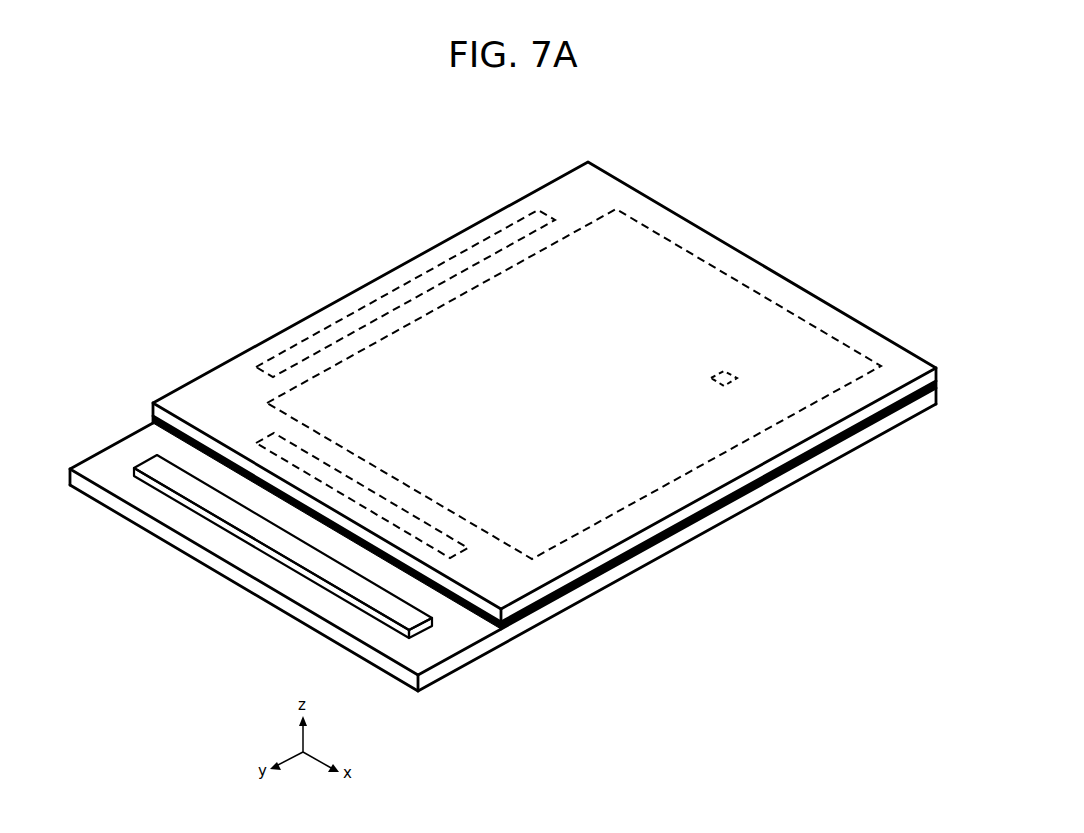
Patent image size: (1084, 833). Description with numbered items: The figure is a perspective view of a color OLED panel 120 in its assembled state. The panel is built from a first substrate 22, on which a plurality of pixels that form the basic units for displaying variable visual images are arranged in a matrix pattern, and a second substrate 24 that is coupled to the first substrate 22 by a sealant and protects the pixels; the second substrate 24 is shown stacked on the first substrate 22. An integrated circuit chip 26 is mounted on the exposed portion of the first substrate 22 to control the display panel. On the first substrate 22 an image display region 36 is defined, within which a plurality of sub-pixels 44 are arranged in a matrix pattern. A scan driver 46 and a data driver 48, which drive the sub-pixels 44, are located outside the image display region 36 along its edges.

The color OLED panel 120 is at (282, 263).
The first substrate 22 is at (452, 642).
The second substrate 24 is at (595, 187).
The integrated circuit chip 26 is at (272, 528).
The image display region 36 is at (772, 300).
The sub-pixel 44 is at (737, 377).
The scan driver 46 is at (420, 276).
The data driver 48 is at (273, 433).